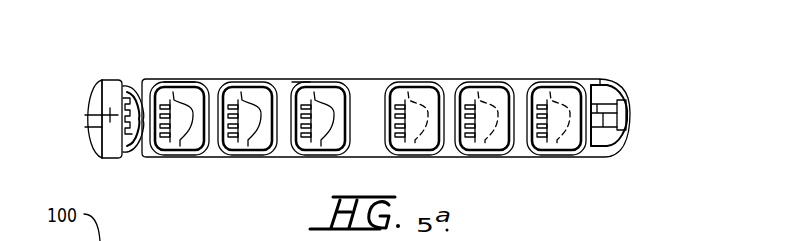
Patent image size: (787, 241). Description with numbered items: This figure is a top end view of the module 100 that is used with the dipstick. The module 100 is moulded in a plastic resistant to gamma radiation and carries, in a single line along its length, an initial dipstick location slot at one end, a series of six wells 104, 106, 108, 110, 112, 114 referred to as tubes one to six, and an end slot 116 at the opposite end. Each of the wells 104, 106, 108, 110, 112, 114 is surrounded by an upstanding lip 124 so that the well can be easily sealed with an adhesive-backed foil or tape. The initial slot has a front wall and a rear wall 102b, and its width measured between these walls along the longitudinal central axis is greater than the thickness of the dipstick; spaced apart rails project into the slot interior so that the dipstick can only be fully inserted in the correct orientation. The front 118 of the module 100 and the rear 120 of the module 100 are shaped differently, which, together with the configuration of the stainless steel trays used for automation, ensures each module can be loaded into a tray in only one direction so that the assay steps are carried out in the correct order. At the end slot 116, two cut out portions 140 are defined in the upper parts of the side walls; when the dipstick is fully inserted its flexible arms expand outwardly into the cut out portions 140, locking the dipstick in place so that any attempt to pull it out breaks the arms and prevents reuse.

The module 100 is at (84, 80).
The rear wall of initial slot 102b is at (597, 103).
The well 104 is at (550, 100).
The well 106 is at (493, 100).
The well 108 is at (403, 100).
The well 110 is at (315, 100).
The well 112 is at (253, 93).
The well 114 is at (173, 100).
The end slot 116 is at (135, 102).
The front of the module 118 is at (102, 141).
The rear of the module 120 is at (623, 83).
The upstanding lip 124 is at (222, 81).
The cut out portion 140 is at (602, 72).